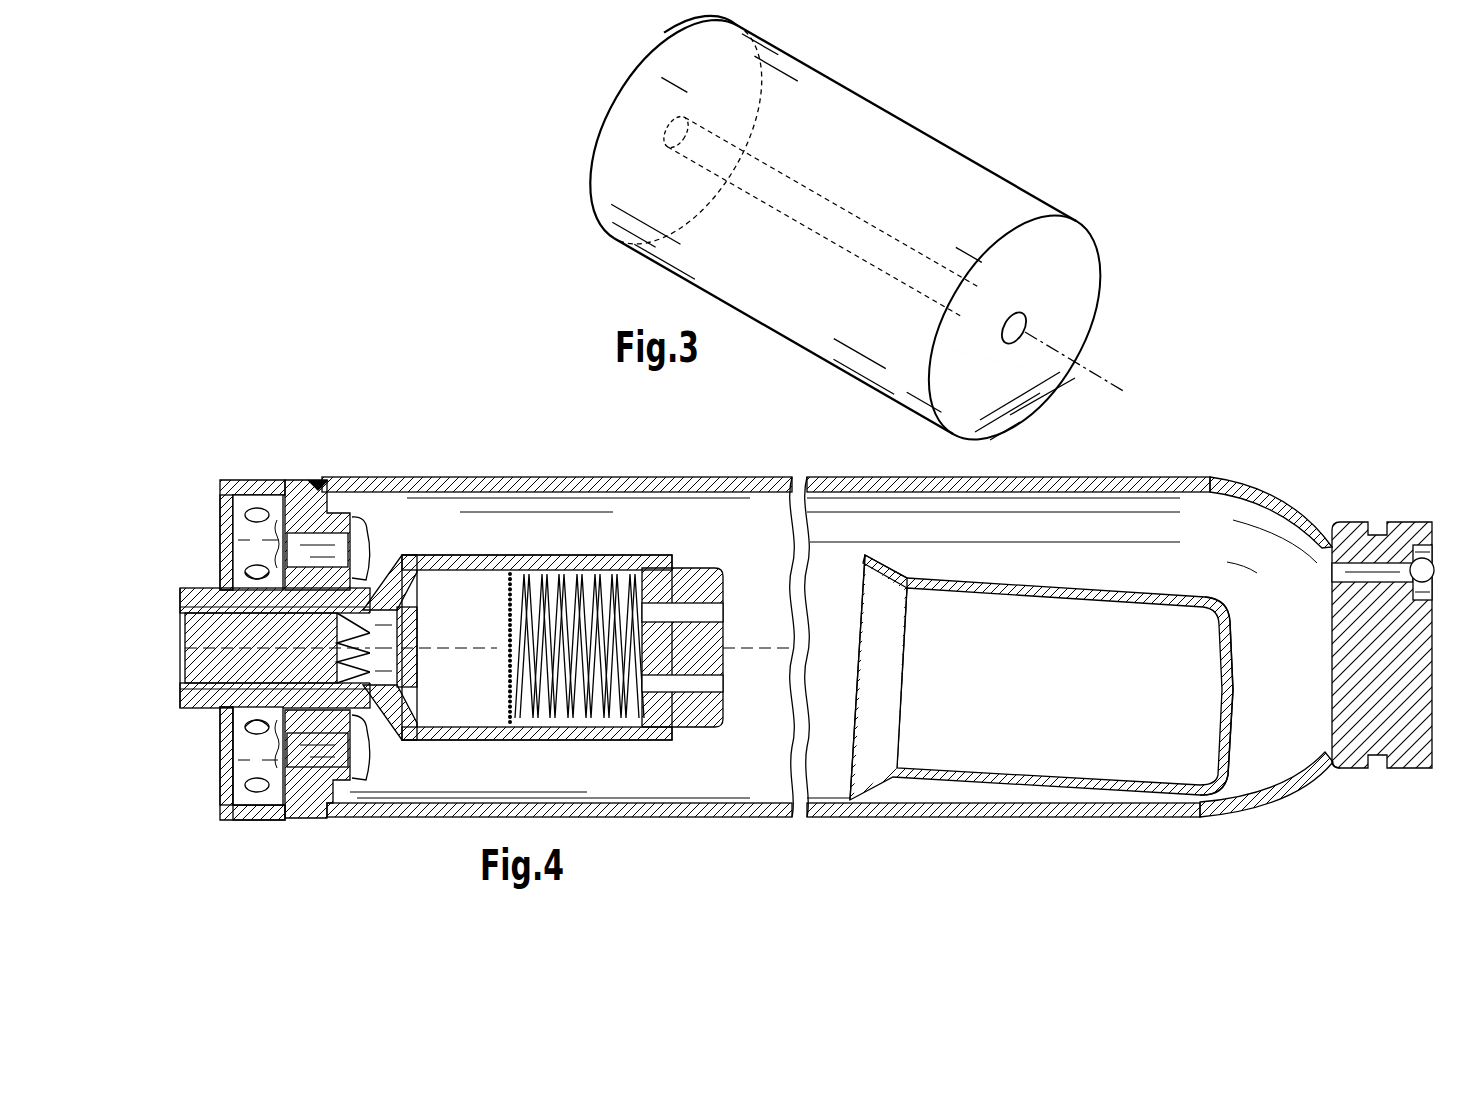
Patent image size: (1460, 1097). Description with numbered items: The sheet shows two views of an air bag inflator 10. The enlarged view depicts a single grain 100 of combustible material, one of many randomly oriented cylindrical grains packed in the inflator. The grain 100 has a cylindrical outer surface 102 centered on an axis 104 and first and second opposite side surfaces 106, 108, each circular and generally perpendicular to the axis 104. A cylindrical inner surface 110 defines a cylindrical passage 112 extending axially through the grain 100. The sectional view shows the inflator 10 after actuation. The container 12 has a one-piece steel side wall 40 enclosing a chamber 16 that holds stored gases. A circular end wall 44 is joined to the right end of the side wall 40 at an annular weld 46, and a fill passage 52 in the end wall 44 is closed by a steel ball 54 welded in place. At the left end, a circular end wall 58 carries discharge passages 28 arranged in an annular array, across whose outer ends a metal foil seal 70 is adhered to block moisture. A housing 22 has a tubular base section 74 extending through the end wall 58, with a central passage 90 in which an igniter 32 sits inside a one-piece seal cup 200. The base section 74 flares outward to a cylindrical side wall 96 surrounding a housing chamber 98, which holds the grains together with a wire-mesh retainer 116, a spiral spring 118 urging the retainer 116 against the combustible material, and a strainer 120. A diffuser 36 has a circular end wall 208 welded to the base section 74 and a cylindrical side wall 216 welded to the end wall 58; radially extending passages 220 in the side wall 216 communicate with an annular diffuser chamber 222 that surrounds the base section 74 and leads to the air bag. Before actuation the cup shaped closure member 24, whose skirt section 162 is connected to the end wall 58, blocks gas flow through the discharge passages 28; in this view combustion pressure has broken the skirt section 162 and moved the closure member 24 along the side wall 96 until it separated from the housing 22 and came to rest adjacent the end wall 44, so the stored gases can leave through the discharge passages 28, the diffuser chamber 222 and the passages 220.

In FIG. 4, the inflator 10 is at (821, 834).
In FIG. 4, the container 12 is at (1226, 474).
In FIG. 4, the chamber 16 is at (1275, 525).
In FIG. 4, the housing 22 is at (626, 551).
In FIG. 4, the cup shaped closure member 24 is at (995, 580).
In FIG. 4, the discharge passages 28 is at (320, 552).
In FIG. 4, the igniter 32 is at (201, 628).
In FIG. 4, the diffuser 36 is at (269, 477).
In FIG. 4, the side wall 40 is at (1108, 478).
In FIG. 4, the end wall 44 is at (1412, 772).
In FIG. 4, the annular weld 46 is at (1340, 766).
In FIG. 4, the fill passage 52 is at (1340, 572).
In FIG. 4, the steel ball 54 is at (1422, 556).
In FIG. 4, the end wall 58 is at (290, 824).
In FIG. 4, the metal foil seal 70 is at (280, 757).
In FIG. 4, the base section 74 is at (240, 700).
In FIG. 4, the passage 90 is at (380, 668).
In FIG. 4, the side wall 96 is at (580, 733).
In FIG. 4, the housing chamber 98 is at (485, 700).
In FIG. 3, the grain 100 is at (1008, 132).
In FIG. 3, the cylindrical outer surface 102 is at (673, 230).
In FIG. 3, the axis 104 is at (1125, 392).
In FIG. 3, the first side surface 106 is at (1077, 262).
In FIG. 3, the second side surface 108 is at (613, 97).
In FIG. 3, the cylindrical inner surface 110 is at (1027, 327).
In FIG. 3, the cylindrical passage 112 is at (1017, 342).
In FIG. 4, the retainer 116 is at (504, 580).
In FIG. 4, the spiral spring 118 is at (566, 570).
In FIG. 4, the strainer 120 is at (1187, 612).
In FIG. 4, the skirt section 162 is at (888, 574).
In FIG. 4, the seal cup 200 is at (368, 602).
In FIG. 4, the end wall 208 is at (222, 522).
In FIG. 4, the side wall 216 is at (277, 820).
In FIG. 4, the passages 220 is at (258, 818).
In FIG. 4, the diffuser chamber 222 is at (250, 535).